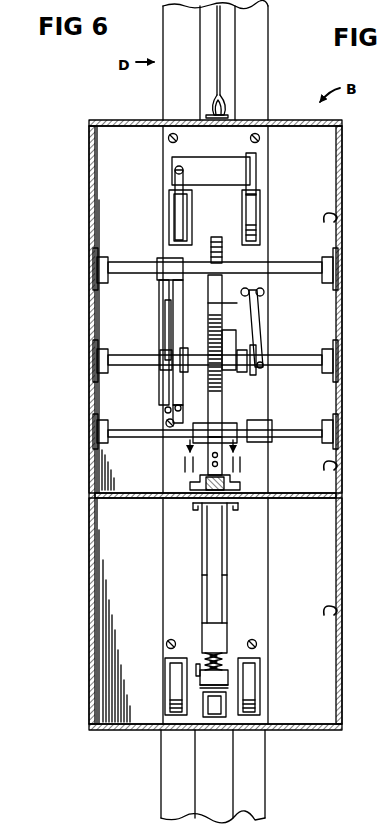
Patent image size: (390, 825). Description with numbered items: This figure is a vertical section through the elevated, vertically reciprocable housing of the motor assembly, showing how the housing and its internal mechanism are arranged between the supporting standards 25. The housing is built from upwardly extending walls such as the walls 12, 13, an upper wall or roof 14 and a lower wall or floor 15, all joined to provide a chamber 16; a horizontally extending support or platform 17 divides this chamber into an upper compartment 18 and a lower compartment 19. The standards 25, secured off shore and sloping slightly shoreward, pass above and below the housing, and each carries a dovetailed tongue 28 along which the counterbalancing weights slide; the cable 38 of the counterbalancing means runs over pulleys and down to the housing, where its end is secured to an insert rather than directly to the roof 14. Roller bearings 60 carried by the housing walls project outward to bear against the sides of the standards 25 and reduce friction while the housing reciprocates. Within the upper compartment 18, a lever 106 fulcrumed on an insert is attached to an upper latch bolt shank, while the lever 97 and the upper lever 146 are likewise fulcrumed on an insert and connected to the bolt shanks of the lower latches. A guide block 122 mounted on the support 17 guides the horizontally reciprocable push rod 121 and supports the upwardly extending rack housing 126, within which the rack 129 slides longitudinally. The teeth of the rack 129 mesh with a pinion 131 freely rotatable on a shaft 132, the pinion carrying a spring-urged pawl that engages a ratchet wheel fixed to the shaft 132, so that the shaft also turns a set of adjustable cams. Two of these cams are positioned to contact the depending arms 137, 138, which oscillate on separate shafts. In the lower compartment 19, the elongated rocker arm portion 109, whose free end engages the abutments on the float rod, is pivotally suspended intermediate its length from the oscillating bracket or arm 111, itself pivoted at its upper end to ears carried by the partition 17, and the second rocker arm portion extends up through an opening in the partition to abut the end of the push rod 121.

The wall 12 is at (339, 532).
The wall 13 is at (87, 533).
The upper wall or roof 14 is at (128, 120).
The lower wall or floor 15 is at (290, 740).
The chamber 16 is at (339, 472).
The support or platform 17 is at (322, 500).
The upper compartment 18 is at (339, 218).
The lower compartment 19 is at (339, 612).
The standard 25 is at (182, 83).
The tongue 28 is at (232, 35).
The cable 38 is at (219, 58).
The roller bearing 60 is at (250, 668).
The lever 97 is at (195, 410).
The lever 106 is at (230, 160).
The rocker arm portion 109 is at (230, 632).
The oscillating bracket or arm 111 is at (215, 590).
The push rod 121 is at (226, 485).
The guide block 122 is at (205, 485).
The rack housing 126 is at (225, 418).
The rack 129 is at (218, 250).
The pinion 131 is at (222, 330).
The shaft 132 is at (265, 373).
The arm 137 is at (167, 328).
The arm 138 is at (185, 395).
The upper lever 146 is at (195, 293).